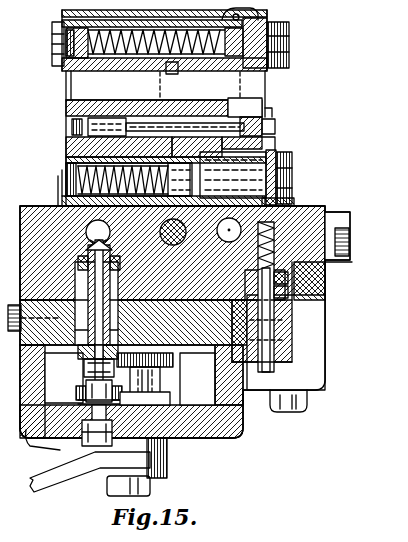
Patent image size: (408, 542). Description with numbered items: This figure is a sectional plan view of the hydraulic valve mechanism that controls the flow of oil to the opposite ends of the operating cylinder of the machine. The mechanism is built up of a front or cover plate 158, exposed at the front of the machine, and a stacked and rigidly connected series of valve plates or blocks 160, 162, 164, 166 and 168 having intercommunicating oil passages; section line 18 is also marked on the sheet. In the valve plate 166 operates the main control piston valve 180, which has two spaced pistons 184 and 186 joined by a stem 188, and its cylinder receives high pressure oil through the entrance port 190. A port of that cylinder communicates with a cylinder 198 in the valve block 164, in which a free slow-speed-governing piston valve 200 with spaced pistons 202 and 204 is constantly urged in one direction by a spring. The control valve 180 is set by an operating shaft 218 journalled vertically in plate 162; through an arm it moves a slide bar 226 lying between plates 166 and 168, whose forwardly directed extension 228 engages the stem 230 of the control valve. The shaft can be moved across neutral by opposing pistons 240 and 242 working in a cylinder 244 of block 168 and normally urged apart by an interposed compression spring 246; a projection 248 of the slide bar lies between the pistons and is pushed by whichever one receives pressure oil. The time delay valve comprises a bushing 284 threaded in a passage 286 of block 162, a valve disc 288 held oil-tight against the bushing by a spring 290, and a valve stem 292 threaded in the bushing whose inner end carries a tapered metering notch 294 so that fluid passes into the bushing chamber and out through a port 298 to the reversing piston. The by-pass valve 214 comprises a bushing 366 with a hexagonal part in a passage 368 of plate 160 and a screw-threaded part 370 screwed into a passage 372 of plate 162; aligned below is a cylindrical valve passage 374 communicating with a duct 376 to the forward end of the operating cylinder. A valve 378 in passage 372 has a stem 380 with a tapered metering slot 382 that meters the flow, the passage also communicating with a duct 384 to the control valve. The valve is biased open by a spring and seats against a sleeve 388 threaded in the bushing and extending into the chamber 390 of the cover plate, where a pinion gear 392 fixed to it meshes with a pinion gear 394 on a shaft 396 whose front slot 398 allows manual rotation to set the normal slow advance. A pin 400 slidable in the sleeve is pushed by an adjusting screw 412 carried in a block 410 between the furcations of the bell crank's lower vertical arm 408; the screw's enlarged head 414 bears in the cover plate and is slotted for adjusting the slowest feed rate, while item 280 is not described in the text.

The section line / port 18 is at (20, 300).
The cover plate 158 is at (318, 385).
The valve plate 160 is at (325, 336).
The valve plate 162 is at (300, 288).
The valve block 164 is at (284, 160).
The valve plate 166 is at (66, 146).
The valve block 168 is at (66, 84).
The piston valve 180 is at (172, 100).
The piston 184 is at (206, 106).
The piston 186 is at (70, 121).
The stem 188 is at (72, 128).
The entrance port 190 is at (160, 72).
The cylinder 198 is at (280, 188).
The slow-speed-governing piston valve 200 is at (226, 166).
The piston 202 is at (300, 146).
The piston 204 is at (164, 146).
The by-pass valve 214 is at (72, 355).
The operating shaft 218 is at (176, 356).
The slide bar 226 is at (265, 91).
The extension 228 is at (272, 108).
The stem 230 is at (243, 118).
The piston 240 is at (62, 18).
The piston 242 is at (262, 14).
The cylinder 244 is at (128, 62).
The compression spring 246 is at (55, 40).
The projection 248 is at (150, 72).
The lever 280 is at (62, 480).
The bushing 284 is at (296, 314).
The passage 286 is at (300, 279).
The valve disc 288 is at (297, 236).
The spring 290 is at (285, 207).
The valve stem 292 is at (266, 372).
The tapered metering notch 294 is at (330, 265).
The port 298 is at (300, 298).
The bushing 366 is at (78, 362).
The passage 368 is at (162, 368).
The screw-threaded part 370 is at (118, 286).
The passage 372 is at (60, 203).
The cylindrical valve passage 374 is at (66, 196).
The duct 376 is at (66, 188).
The valve 378 is at (118, 270).
The stem 380 is at (112, 240).
The tapered metering slot 382 is at (66, 168).
The duct 384 is at (108, 257).
The sleeve 388 is at (140, 307).
The chamber 390 is at (240, 415).
The pinion gear 392 is at (84, 376).
The pinion gear 394 is at (162, 382).
The shaft 396 is at (170, 396).
The slot 398 is at (168, 450).
The pin 400 is at (78, 395).
The lower vertical arm 408 is at (106, 399).
The block 410 is at (90, 406).
The adjusting screw 412 is at (42, 440).
The enlarged head 414 is at (110, 440).